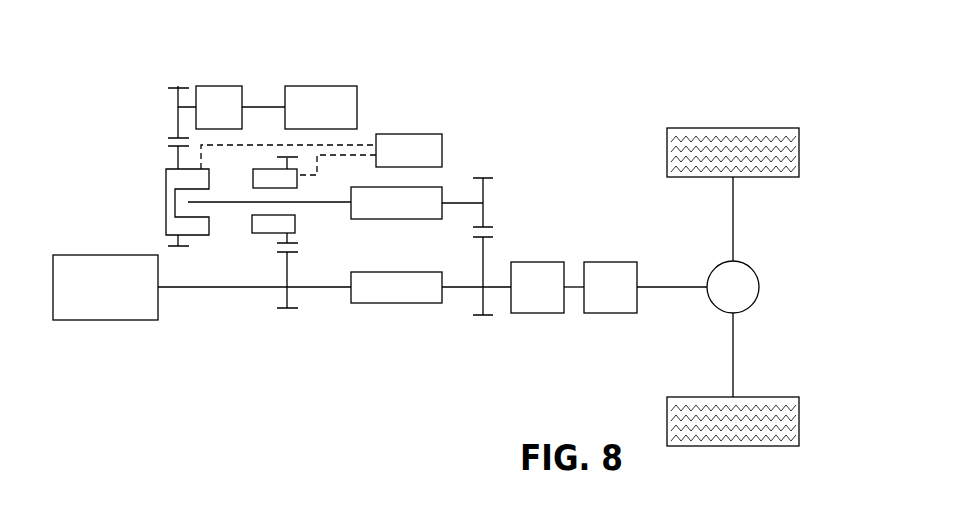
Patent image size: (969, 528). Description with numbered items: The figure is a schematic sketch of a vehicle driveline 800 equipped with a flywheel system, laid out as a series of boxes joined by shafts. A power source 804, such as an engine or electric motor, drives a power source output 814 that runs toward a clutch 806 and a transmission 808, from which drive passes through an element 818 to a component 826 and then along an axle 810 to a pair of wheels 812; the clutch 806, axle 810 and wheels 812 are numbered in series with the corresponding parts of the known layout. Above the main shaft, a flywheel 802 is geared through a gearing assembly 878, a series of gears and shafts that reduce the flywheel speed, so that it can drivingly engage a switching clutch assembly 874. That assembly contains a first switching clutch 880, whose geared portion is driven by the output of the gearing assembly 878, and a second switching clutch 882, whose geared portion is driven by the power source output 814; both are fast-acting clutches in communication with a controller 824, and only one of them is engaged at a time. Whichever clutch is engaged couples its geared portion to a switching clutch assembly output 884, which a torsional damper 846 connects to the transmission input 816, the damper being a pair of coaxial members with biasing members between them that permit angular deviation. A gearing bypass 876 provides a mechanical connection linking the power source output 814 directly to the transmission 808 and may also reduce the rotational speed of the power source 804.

The vehicle driveline 800 is at (155, 43).
The flywheel 802 is at (319, 85).
The power source 804 is at (103, 320).
The clutch 806 is at (540, 313).
The transmission 808 is at (609, 313).
The axle 810 is at (733, 362).
The wheels 812 is at (732, 128).
The power source output 814 is at (217, 287).
The transmission input 816 is at (576, 285).
The output shaft 818 is at (660, 290).
The controller 824 is at (428, 134).
The differential 826 is at (680, 285).
The torsional damper 846 is at (430, 187).
The switching clutch assembly 874 is at (150, 158).
The gearing bypass 876 is at (395, 303).
The gearing assembly 878 is at (217, 85).
The first switching clutch 880 is at (166, 228).
The second switching clutch 882 is at (297, 227).
The switching clutch assembly output 884 is at (230, 205).